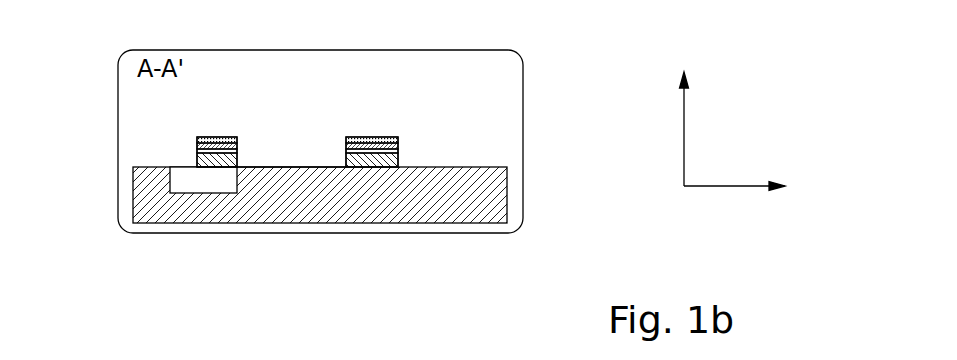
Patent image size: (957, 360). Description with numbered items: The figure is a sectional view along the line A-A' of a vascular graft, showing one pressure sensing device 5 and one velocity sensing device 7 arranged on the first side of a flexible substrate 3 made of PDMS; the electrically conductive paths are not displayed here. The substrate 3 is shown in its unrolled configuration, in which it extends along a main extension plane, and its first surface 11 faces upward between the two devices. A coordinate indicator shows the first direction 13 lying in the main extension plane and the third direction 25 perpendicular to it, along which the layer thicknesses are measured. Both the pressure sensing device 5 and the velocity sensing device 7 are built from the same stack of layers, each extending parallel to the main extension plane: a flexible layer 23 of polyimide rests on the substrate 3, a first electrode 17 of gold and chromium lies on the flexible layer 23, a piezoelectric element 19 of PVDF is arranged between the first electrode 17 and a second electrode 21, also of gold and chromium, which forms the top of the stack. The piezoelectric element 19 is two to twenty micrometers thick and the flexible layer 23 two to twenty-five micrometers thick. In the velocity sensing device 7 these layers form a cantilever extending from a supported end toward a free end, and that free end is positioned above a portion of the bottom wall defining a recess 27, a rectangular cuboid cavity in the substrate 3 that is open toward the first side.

The flexible substrate 3 is at (490, 197).
The pressure sensing device 5 is at (376, 109).
The velocity sensing device 7 is at (221, 109).
The first surface 11 is at (294, 151).
The first direction 13 is at (730, 187).
The first electrode 17 is at (197, 151).
The piezoelectric element 19 is at (197, 146).
The second electrode 21 is at (197, 139).
The flexible layer 23 is at (197, 159).
The third direction 25 is at (686, 113).
The recess 27 is at (193, 182).